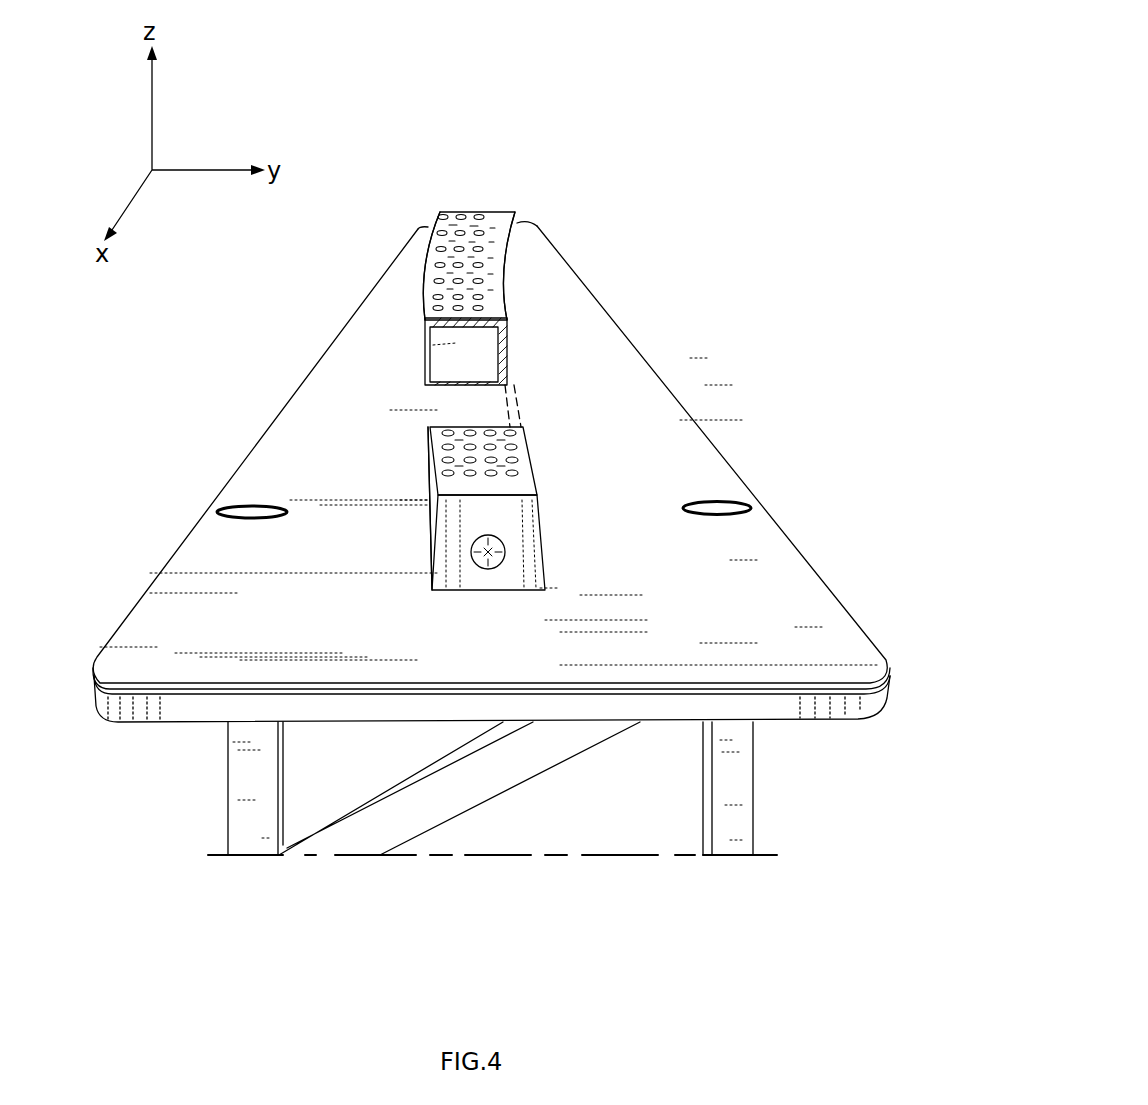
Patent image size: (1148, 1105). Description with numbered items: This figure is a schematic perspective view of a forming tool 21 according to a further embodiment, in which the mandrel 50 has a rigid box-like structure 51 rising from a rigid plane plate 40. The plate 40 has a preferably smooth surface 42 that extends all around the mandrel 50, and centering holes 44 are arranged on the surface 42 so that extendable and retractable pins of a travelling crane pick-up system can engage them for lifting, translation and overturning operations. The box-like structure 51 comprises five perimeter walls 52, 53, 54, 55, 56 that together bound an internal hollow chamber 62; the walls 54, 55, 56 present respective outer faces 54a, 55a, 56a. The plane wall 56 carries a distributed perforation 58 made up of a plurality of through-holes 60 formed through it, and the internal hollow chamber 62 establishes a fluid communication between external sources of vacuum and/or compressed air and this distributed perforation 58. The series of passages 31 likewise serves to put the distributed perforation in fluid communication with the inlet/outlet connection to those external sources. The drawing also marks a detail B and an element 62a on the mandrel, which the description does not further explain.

The forming tool 21 is at (660, 97).
The series of passages 31 is at (460, 402).
The rigid plane plate 40 is at (851, 724).
The surface 42 is at (853, 652).
The centering holes 44 is at (217, 512).
The mandrel 50 is at (510, 304).
The rigid box-like structure 51 is at (418, 228).
The perimeter wall 52 is at (427, 553).
The perimeter wall 53 is at (522, 220).
The perimeter wall 54 is at (507, 325).
The outer face 54a is at (427, 498).
The perimeter wall 55 is at (513, 232).
The outer face 55a is at (509, 250).
The plane wall 56 is at (424, 298).
The outer face 56a is at (527, 482).
The distributed perforation 58 is at (498, 481).
The through-holes 60 is at (503, 337).
The internal hollow chamber 62 is at (427, 345).
The sensor 62a is at (480, 568).
The detail B is at (474, 562).